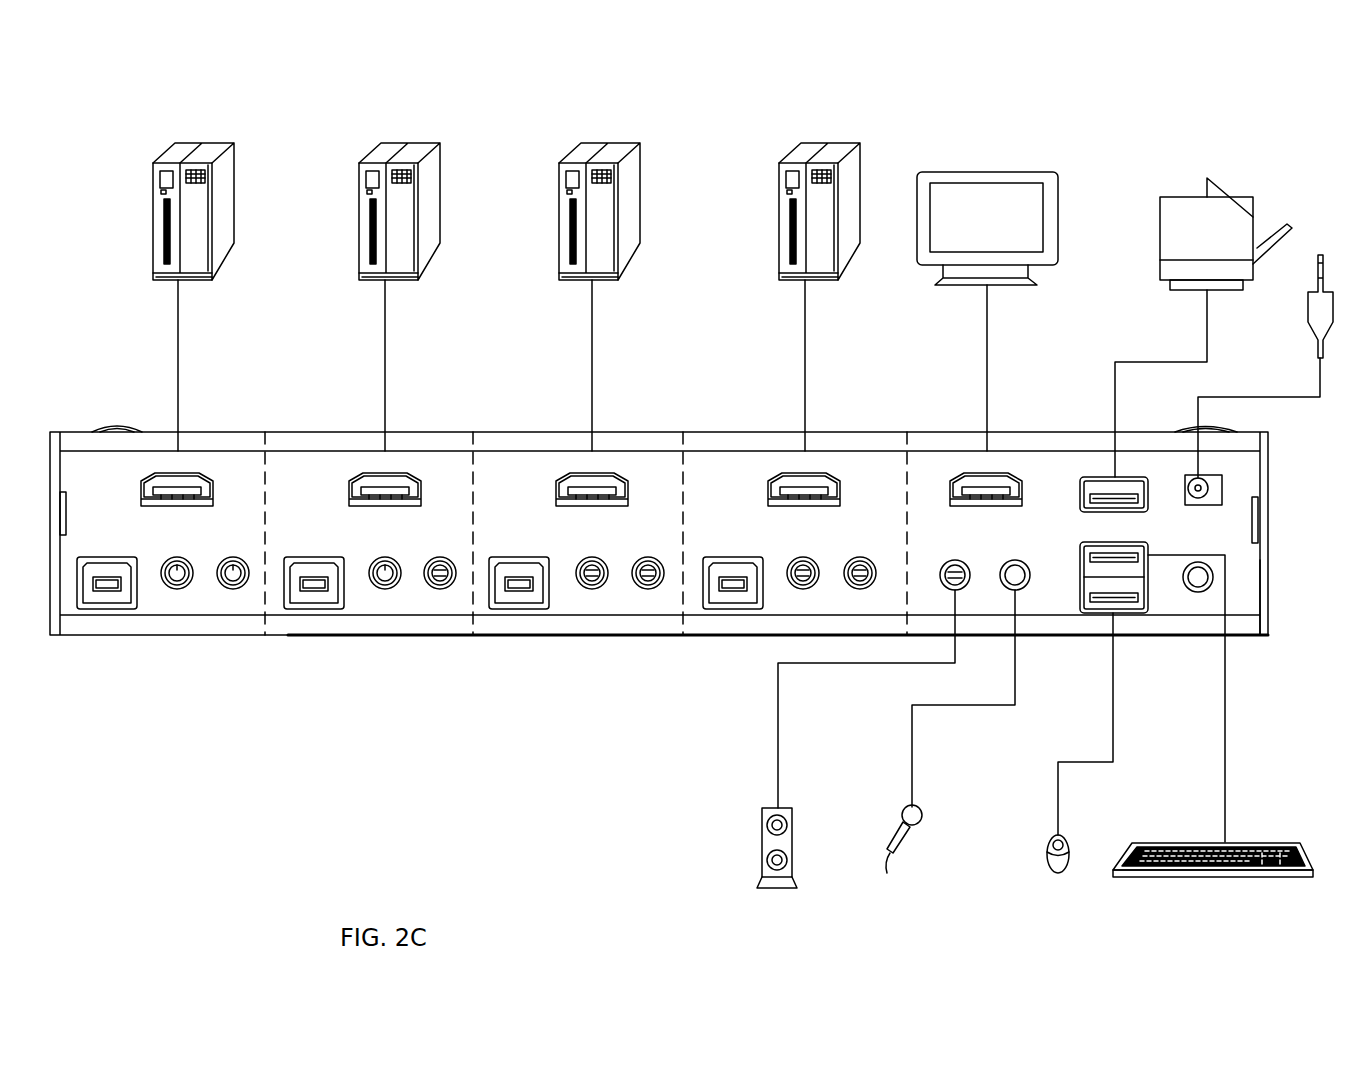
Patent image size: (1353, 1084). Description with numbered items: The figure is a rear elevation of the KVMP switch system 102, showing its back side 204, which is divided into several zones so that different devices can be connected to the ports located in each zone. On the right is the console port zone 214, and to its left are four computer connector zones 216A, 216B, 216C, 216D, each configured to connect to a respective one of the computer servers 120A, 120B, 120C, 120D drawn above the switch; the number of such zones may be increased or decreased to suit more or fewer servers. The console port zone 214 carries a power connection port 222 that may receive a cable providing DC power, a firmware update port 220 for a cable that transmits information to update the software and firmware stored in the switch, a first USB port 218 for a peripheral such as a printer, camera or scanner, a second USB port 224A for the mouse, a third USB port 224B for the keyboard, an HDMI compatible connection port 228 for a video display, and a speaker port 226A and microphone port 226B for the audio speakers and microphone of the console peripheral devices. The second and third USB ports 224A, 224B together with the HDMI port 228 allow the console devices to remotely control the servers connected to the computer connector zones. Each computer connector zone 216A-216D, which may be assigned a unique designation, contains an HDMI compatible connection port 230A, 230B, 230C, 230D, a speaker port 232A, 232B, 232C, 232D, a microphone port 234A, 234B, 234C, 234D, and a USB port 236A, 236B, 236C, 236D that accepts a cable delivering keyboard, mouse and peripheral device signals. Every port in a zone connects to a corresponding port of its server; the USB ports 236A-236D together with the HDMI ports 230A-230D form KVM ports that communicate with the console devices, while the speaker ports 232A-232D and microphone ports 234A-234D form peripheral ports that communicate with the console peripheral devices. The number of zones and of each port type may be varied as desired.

The KVMP switch system 102 is at (1105, 167).
The computer server 120A is at (218, 143).
The computer server 120B is at (420, 143).
The computer server 120C is at (612, 143).
The computer server 120D is at (835, 143).
The back side 204 is at (1232, 581).
The console port zone 214 is at (1036, 472).
The computer connector zone 216A is at (224, 468).
The computer connector zone 216B is at (432, 468).
The computer connector zone 216C is at (632, 468).
The computer connector zone 216D is at (855, 468).
The first USB port 218 is at (1086, 470).
The firmware update port 220 is at (1193, 593).
The power connection port 222 is at (1222, 479).
The second USB port 224A is at (1096, 615).
The third USB port 224B is at (1080, 556).
The speaker port 226A is at (1008, 590).
The microphone port 226B is at (945, 571).
The HDMI compatible connection port 228 is at (955, 477).
The HDMI compatible connection port 230A is at (150, 478).
The HDMI compatible connection port 230B is at (358, 478).
The HDMI compatible connection port 230C is at (565, 478).
The HDMI compatible connection port 230D is at (778, 478).
The speaker port 232A is at (233, 589).
The speaker port 232B is at (440, 589).
The speaker port 232C is at (648, 589).
The speaker port 232D is at (858, 557).
The microphone port 234A is at (177, 589).
The microphone port 234B is at (385, 589).
The microphone port 234C is at (592, 589).
The microphone port 234D is at (803, 590).
The USB port 236A is at (107, 609).
The USB port 236B is at (314, 609).
The USB port 236C is at (519, 609).
The USB port 236D is at (735, 557).